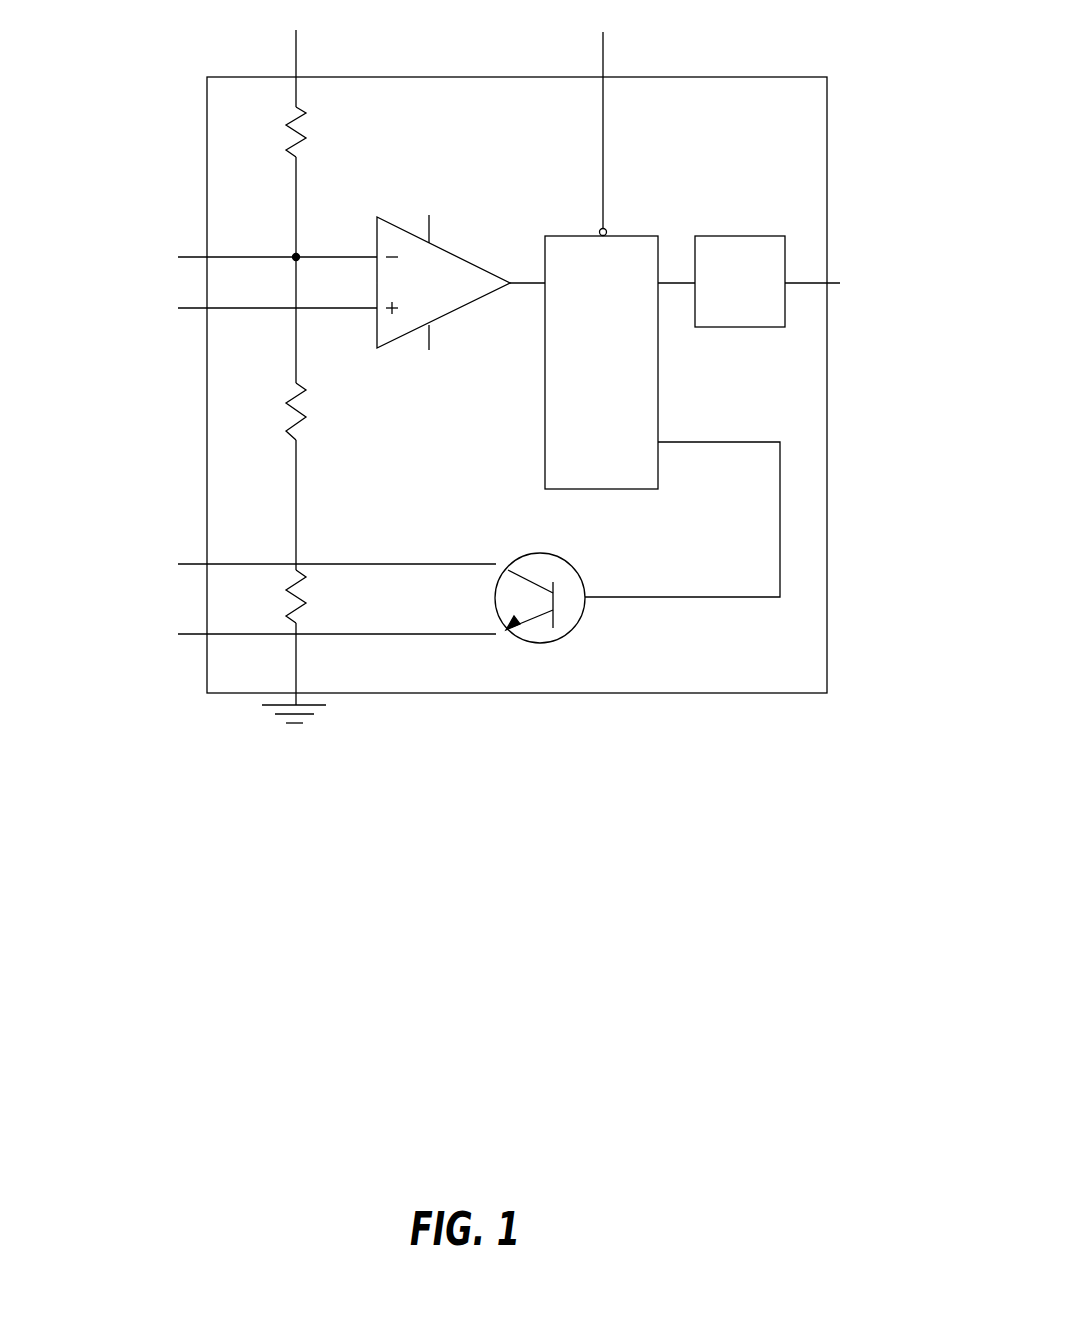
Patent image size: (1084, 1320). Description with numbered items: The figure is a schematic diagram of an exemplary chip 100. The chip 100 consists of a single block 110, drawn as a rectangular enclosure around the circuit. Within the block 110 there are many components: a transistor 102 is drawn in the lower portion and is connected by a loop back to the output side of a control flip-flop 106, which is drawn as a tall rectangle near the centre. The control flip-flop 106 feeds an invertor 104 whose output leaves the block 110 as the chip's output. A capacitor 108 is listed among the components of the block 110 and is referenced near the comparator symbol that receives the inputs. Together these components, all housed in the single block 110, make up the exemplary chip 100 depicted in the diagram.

The chip 100 is at (142, 828).
The transistor 102 is at (580, 578).
The invertor 104 is at (745, 236).
The control flip-flop 106 is at (640, 236).
The capacitor 108 is at (393, 216).
The block 110 is at (752, 693).